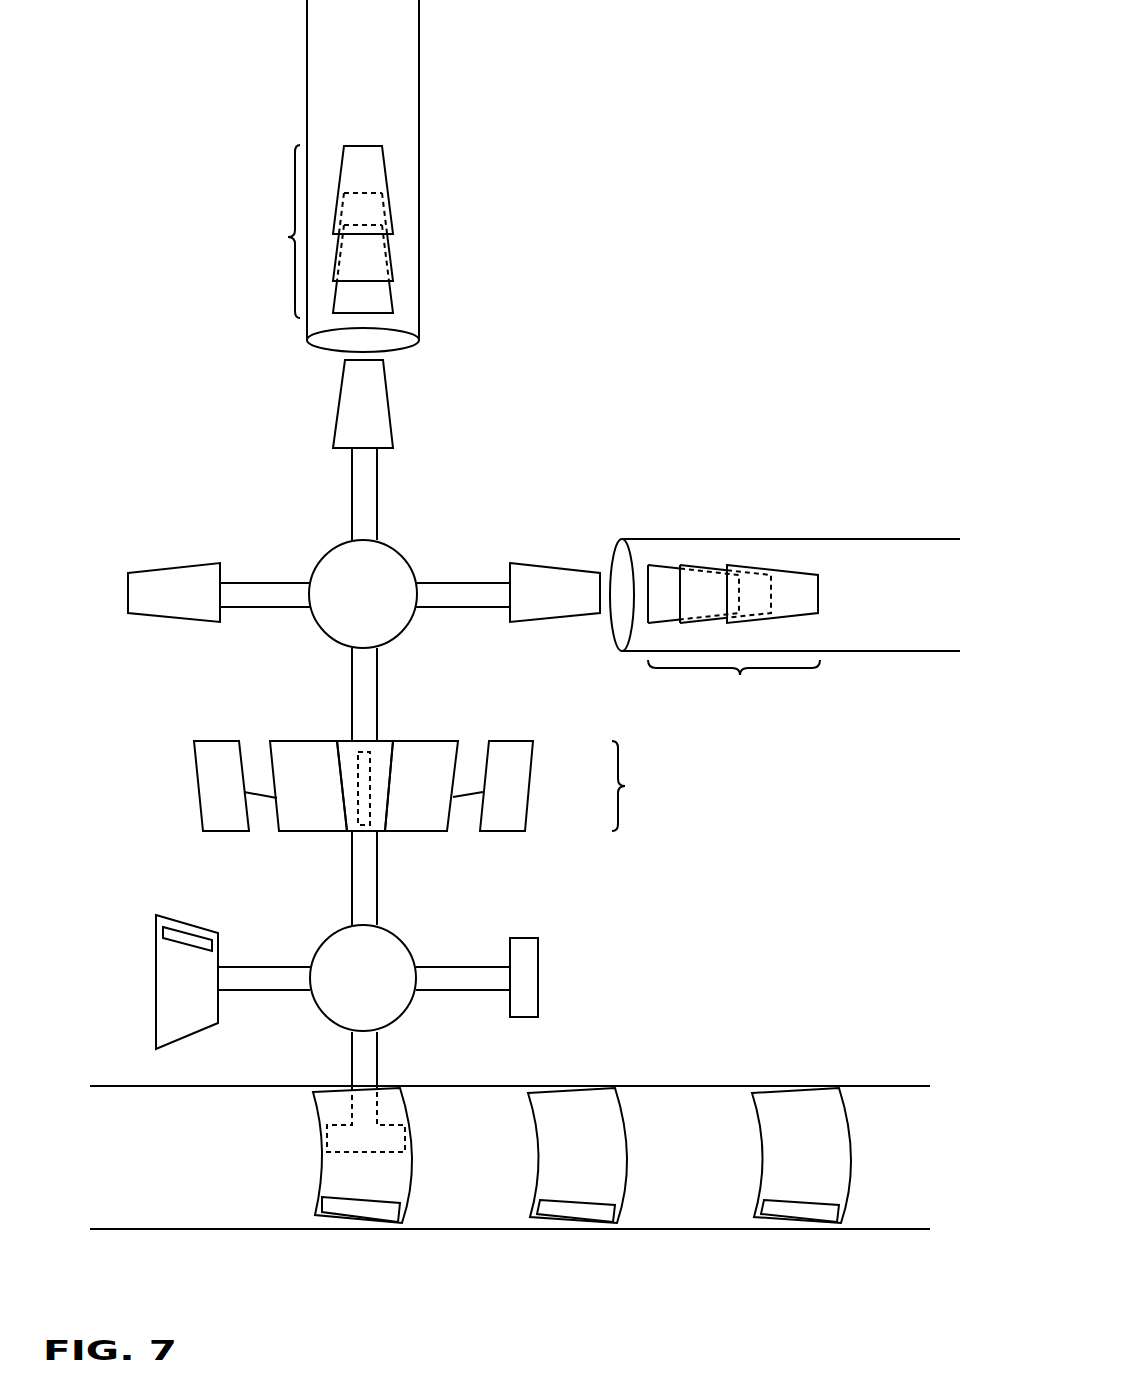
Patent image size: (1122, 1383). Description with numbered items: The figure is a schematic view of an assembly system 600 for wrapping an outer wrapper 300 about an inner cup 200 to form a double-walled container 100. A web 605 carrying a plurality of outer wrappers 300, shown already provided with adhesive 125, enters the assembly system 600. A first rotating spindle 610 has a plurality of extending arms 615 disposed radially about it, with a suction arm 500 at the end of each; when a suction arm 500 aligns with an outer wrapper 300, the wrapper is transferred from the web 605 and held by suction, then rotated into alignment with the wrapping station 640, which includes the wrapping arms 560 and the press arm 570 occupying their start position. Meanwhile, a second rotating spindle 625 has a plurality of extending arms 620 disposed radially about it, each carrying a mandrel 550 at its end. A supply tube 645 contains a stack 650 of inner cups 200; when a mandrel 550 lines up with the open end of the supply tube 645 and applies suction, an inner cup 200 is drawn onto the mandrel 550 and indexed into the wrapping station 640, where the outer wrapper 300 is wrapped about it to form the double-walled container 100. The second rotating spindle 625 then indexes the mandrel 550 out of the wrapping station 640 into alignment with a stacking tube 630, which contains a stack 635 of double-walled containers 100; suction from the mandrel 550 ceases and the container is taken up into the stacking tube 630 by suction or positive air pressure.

The double-walled container 100 is at (150, 573).
The adhesive 125 is at (181, 925).
The inner cup 200 is at (386, 741).
The outer wrapper 300 is at (292, 741).
The suction arm 500 is at (540, 965).
The mandrel 550 is at (553, 567).
The wrapping arms 560 is at (200, 792).
The press arm 570 is at (365, 795).
The assembly system 600 is at (785, 124).
The web 605 is at (885, 1086).
The first rotating spindle 610 is at (390, 962).
The extending arms 615 is at (468, 992).
The extending arms 620 is at (451, 608).
The second rotating spindle 625 is at (393, 562).
The stacking tube 630 is at (420, 156).
The stack of double-walled containers 635 is at (315, 231).
The wrapping station 640 is at (642, 786).
The supply tube 645 is at (845, 538).
The stack of inner cups 650 is at (734, 633).